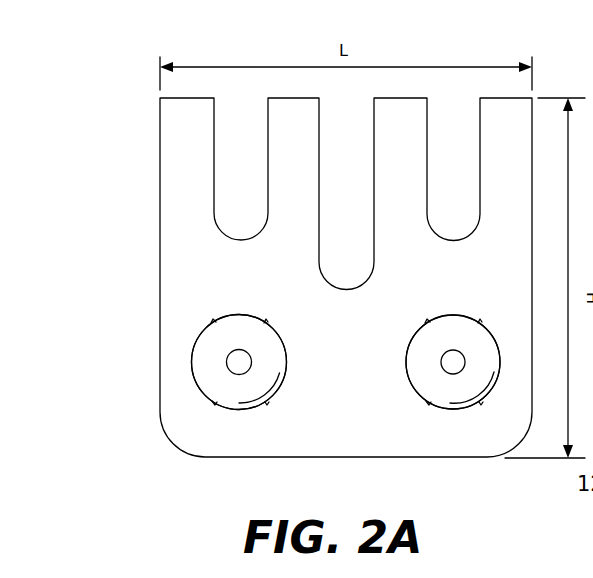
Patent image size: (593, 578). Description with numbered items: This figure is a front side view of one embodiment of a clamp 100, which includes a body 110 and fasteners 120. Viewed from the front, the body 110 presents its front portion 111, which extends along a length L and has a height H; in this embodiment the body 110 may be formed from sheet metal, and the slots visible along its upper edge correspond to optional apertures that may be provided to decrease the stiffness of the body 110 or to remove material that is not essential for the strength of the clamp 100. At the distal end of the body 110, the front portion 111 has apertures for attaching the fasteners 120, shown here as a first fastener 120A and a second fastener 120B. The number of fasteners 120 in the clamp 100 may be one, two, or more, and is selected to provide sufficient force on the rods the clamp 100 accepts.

The clamp 100 is at (128, 65).
The body 110 is at (142, 190).
The front portion 111 is at (474, 292).
The fasteners 120 is at (142, 301).
The first fastener 120A is at (290, 323).
The second fastener 120B is at (398, 399).